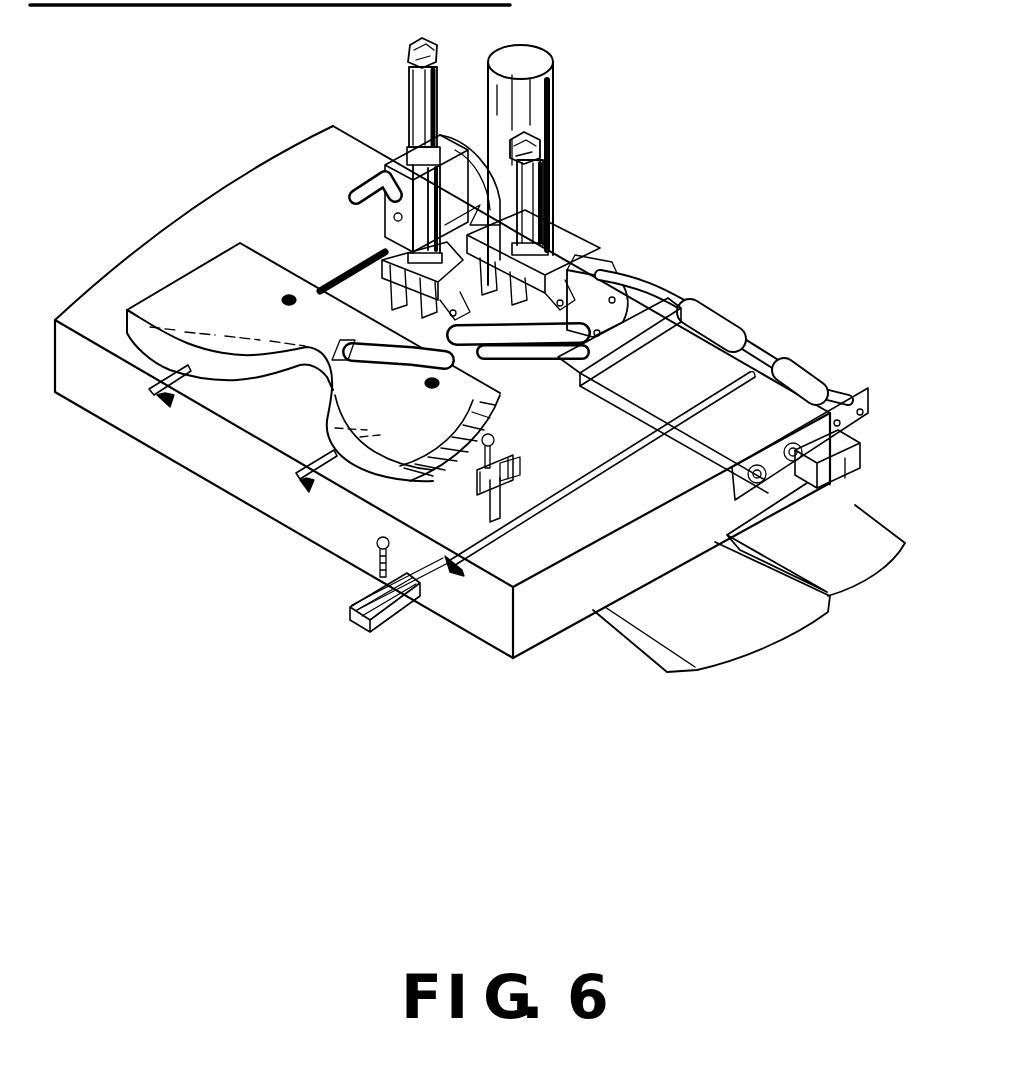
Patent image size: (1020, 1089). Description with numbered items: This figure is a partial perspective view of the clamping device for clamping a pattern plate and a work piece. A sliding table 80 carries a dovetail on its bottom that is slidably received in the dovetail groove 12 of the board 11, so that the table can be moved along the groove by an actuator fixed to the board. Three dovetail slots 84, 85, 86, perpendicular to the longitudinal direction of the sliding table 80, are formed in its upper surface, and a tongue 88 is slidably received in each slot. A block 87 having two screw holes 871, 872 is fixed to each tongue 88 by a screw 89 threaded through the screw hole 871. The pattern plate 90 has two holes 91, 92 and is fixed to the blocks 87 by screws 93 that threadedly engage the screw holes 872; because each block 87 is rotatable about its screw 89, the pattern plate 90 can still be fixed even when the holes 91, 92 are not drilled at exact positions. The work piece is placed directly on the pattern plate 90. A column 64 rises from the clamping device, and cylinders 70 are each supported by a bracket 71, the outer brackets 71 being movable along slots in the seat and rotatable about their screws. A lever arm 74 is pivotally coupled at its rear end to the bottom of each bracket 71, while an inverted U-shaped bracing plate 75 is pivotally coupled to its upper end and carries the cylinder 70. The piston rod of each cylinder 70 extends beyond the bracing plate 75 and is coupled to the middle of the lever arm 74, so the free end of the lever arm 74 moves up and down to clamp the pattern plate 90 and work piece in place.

The column 64 is at (548, 52).
The cylinder 70 is at (410, 97).
The lever arm 74 is at (360, 188).
The bracing plate 75 is at (560, 270).
The bracket 71 is at (613, 293).
The sliding table 80 is at (208, 466).
The dovetail slot 84 is at (160, 410).
The dovetail slot 85 is at (300, 495).
The dovetail slot 86 is at (576, 472).
The block 87 is at (505, 465).
The screw hole 871 is at (570, 491).
The screw hole 872 is at (488, 505).
The tongue 88 is at (368, 612).
The screw 89 is at (377, 543).
The pattern plate 90 is at (213, 278).
The hole 91 is at (290, 297).
The hole 92 is at (425, 384).
The screw 93 is at (513, 420).
The board 11 is at (880, 535).
The dovetail groove 12 is at (798, 580).